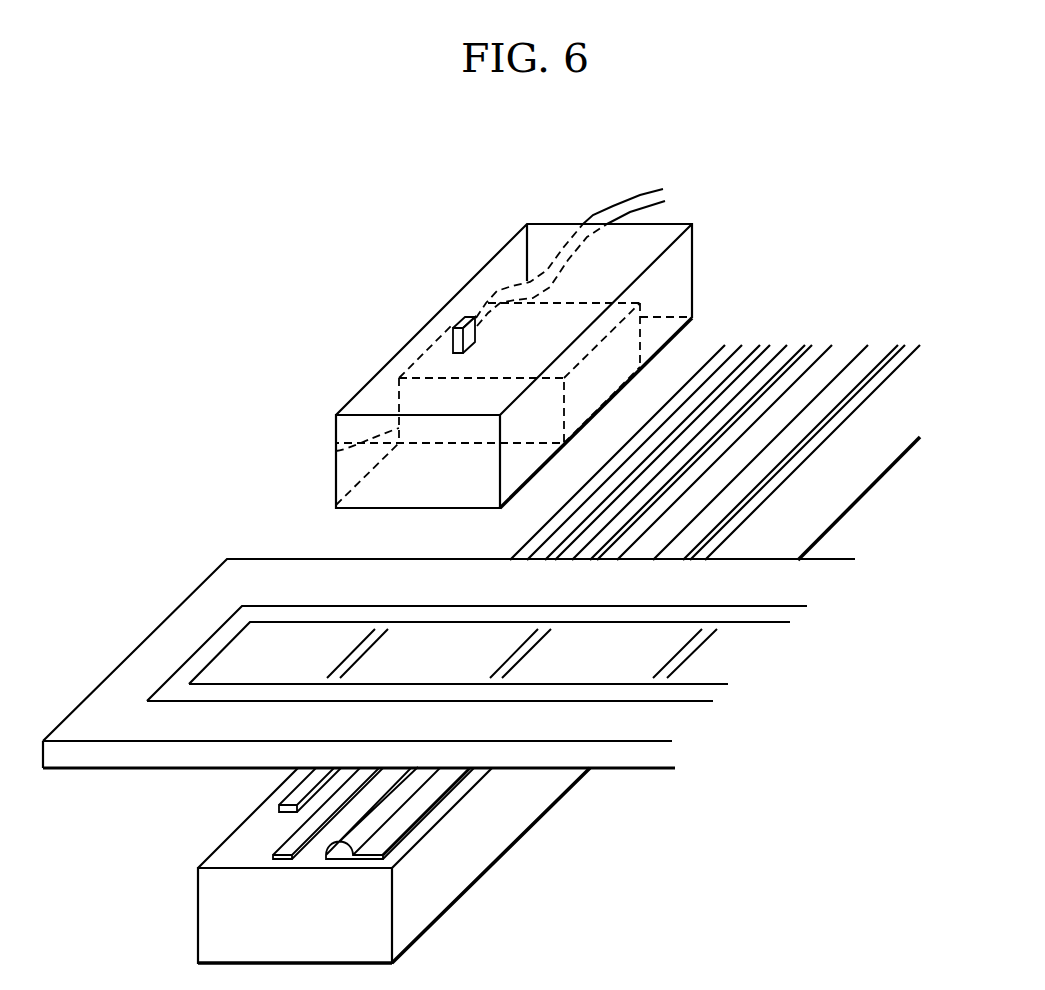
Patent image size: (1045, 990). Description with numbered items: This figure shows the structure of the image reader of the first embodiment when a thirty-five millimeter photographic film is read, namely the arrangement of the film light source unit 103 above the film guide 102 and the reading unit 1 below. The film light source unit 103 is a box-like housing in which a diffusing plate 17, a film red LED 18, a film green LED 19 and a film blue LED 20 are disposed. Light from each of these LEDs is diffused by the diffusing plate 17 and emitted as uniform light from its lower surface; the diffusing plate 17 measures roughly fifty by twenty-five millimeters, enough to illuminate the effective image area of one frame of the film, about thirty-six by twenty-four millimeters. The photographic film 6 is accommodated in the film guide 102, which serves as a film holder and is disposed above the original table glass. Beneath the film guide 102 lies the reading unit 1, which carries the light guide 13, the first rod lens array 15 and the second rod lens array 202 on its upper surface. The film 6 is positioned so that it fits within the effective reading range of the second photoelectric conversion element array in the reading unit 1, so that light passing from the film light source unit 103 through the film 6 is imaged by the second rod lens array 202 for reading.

The reading unit 1 is at (198, 917).
The 35-mm photographic film 6 is at (713, 658).
The light guide 13 is at (397, 827).
The first rod lens array 15 is at (290, 845).
The diffusing plate 17 is at (336, 452).
The film red LED 18 is at (453, 347).
The film green LED 19 is at (455, 332).
The film blue LED 20 is at (463, 320).
The film guide 102 is at (287, 573).
The film light source unit 103 is at (478, 273).
The second rod lens array 202 is at (302, 793).